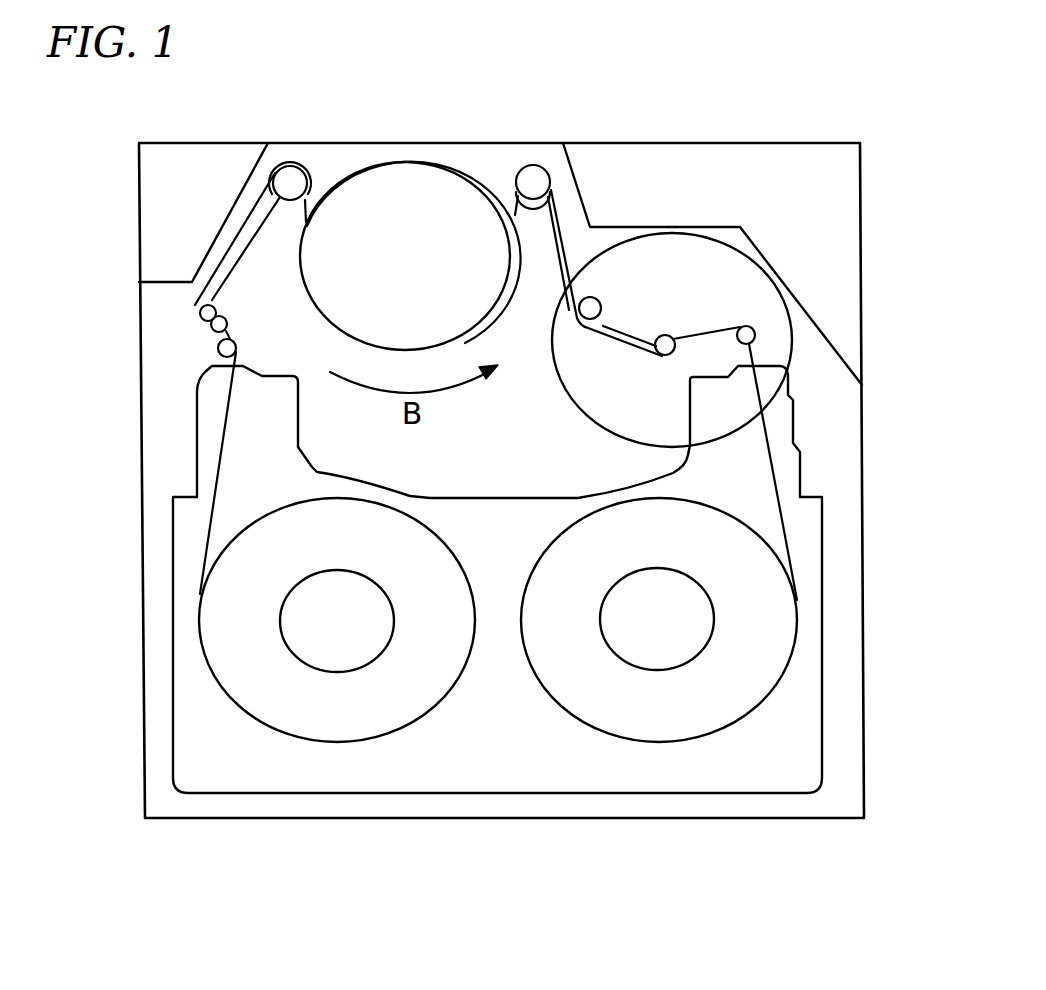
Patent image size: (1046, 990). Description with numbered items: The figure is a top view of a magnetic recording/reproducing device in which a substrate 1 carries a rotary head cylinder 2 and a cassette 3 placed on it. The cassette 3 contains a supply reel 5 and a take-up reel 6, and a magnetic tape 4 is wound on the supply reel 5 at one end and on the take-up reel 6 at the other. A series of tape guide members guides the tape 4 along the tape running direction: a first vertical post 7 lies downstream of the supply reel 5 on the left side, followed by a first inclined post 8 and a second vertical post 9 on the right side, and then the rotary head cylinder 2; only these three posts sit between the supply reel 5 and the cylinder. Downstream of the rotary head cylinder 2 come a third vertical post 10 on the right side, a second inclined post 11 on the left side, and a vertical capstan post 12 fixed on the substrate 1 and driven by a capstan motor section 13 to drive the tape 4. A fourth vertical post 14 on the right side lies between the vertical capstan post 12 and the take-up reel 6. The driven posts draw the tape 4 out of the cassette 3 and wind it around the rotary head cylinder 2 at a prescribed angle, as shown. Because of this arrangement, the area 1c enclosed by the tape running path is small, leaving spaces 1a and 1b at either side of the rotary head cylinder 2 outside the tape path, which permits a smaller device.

The substrate 1 is at (480, 155).
The space 1a is at (745, 178).
The space 1b is at (186, 163).
The area occupied for securing a tape running path 1c is at (335, 455).
The rotary head cylinder 2 is at (389, 178).
The cassette 3 is at (804, 743).
The tape 4 is at (223, 440).
The supply reel 5 is at (322, 728).
The take-up reel 6 is at (645, 720).
The first vertical post 7 is at (222, 350).
The first inclined post 8 is at (200, 313).
The second vertical post 9 is at (292, 172).
The third vertical post 10 is at (532, 172).
The second inclined post 11 is at (592, 297).
The vertical capstan post 12 is at (667, 335).
The capstan motor section 13 is at (768, 312).
The fourth vertical post 14 is at (756, 333).